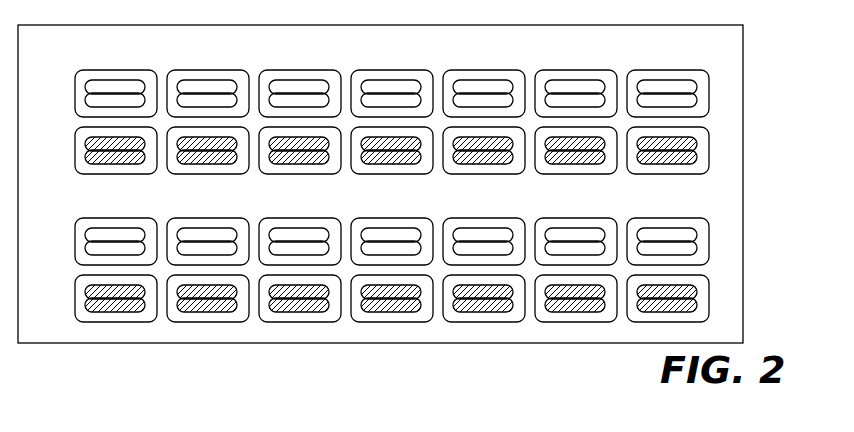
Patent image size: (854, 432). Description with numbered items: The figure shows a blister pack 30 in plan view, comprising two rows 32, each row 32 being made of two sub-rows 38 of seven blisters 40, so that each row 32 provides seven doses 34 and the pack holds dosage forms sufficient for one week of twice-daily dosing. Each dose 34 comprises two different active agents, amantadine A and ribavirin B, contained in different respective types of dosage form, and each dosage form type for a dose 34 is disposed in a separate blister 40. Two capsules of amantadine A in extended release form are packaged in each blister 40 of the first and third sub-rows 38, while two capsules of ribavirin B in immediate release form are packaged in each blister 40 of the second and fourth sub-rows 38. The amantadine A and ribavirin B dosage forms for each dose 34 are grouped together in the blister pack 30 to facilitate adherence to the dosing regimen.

The blister pack 30 is at (438, 33).
The row 32 is at (722, 113).
The dose 34 is at (170, 54).
The sub-row 38 is at (404, 213).
The blister 40 is at (80, 256).
The amantadine capsule A is at (85, 88).
The ribavirin capsule B is at (82, 163).